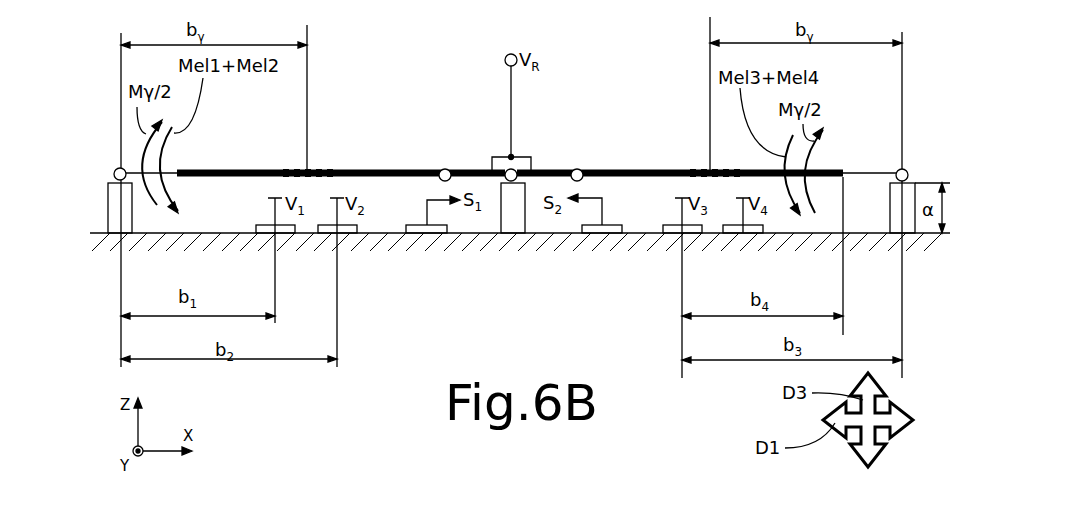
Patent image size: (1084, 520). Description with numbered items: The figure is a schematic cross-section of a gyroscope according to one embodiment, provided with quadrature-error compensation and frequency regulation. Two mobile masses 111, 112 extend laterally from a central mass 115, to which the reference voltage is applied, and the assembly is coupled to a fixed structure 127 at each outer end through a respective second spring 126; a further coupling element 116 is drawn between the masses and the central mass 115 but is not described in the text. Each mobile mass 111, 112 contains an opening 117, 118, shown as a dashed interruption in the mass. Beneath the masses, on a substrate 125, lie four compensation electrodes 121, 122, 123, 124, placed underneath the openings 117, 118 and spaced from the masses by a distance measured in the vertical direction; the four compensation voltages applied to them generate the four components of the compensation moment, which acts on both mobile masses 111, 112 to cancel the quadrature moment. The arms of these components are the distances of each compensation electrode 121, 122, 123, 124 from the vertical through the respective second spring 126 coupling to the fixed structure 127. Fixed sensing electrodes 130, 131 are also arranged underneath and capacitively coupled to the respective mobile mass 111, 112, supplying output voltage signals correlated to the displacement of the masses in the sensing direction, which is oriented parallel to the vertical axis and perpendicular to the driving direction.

The mobile mass 111 is at (428, 168).
The mobile mass 112 is at (630, 168).
The central mass 115 is at (545, 168).
The joint 116 is at (447, 169).
The opening 117 is at (323, 173).
The opening 118 is at (694, 170).
The compensation electrode 121 is at (267, 233).
The compensation electrode 122 is at (345, 233).
The compensation electrode 123 is at (667, 233).
The compensation electrode 124 is at (738, 233).
The substrate 125 is at (923, 250).
The second spring 126 is at (116, 169).
The fixed structure 127 is at (111, 205).
The fixed sensing electrode 130 is at (422, 233).
The fixed sensing electrode 131 is at (597, 233).